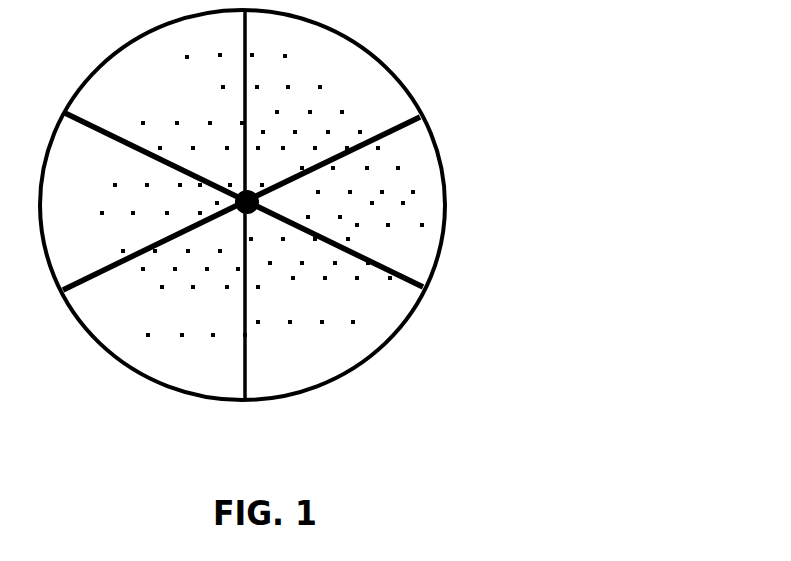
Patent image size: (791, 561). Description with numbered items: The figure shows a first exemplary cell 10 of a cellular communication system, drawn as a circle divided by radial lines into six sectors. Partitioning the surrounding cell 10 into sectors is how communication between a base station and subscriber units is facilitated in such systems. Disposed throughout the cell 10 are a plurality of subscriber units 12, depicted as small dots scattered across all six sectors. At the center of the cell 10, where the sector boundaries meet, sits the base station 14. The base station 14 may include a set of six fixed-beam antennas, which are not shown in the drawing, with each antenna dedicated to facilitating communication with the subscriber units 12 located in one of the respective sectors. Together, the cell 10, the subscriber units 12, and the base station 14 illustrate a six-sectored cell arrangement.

The cell 10 is at (470, 131).
The subscriber units 12 is at (187, 56).
The base station 14 is at (290, 204).